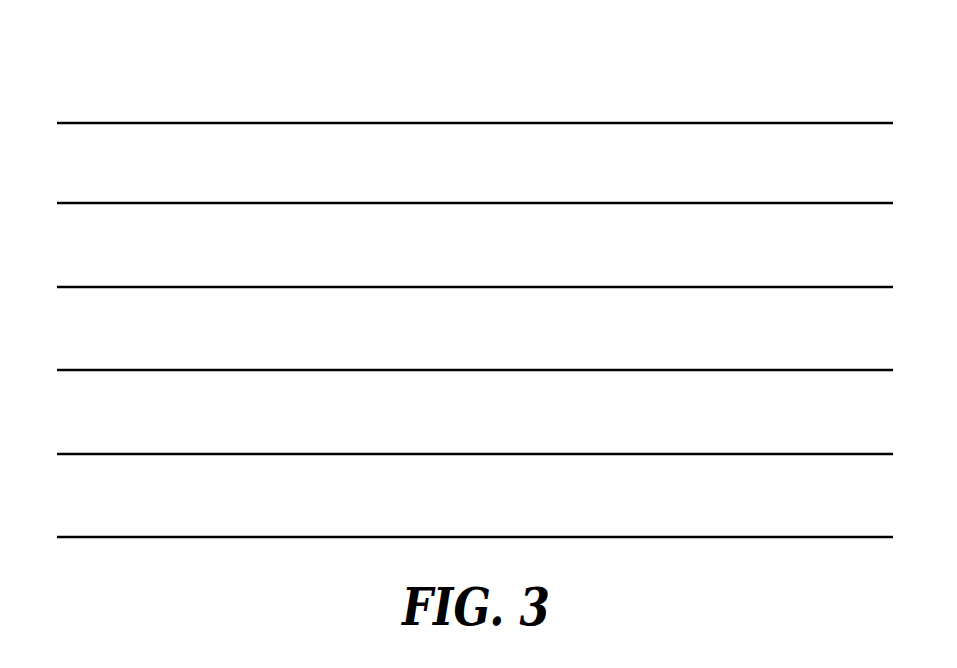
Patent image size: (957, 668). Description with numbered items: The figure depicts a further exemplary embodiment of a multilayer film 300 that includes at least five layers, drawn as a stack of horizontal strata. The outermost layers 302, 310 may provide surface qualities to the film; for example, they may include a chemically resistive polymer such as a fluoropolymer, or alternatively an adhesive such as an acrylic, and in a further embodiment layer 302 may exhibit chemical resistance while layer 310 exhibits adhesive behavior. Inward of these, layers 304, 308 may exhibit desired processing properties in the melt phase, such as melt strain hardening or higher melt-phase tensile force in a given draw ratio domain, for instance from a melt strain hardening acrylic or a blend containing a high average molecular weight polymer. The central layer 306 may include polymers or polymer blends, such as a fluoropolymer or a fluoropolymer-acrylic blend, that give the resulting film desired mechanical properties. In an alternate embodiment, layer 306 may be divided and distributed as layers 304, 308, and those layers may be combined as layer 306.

The multilayer film 300 is at (475, 74).
The layer 302 is at (705, 198).
The layer 304 is at (705, 283).
The layer 306 is at (705, 365).
The layer 308 is at (705, 448).
The layer 310 is at (705, 532).